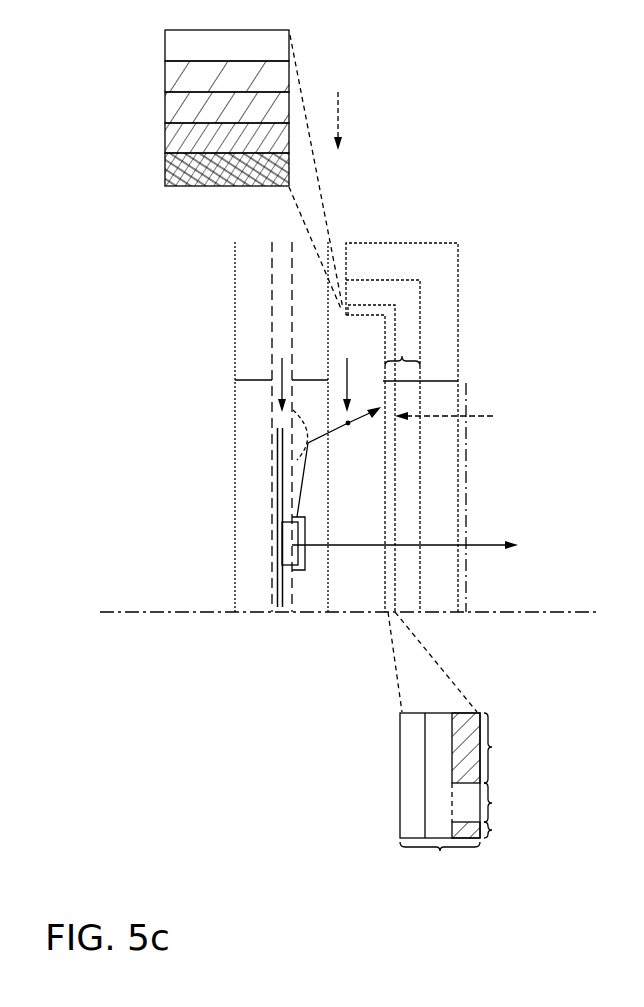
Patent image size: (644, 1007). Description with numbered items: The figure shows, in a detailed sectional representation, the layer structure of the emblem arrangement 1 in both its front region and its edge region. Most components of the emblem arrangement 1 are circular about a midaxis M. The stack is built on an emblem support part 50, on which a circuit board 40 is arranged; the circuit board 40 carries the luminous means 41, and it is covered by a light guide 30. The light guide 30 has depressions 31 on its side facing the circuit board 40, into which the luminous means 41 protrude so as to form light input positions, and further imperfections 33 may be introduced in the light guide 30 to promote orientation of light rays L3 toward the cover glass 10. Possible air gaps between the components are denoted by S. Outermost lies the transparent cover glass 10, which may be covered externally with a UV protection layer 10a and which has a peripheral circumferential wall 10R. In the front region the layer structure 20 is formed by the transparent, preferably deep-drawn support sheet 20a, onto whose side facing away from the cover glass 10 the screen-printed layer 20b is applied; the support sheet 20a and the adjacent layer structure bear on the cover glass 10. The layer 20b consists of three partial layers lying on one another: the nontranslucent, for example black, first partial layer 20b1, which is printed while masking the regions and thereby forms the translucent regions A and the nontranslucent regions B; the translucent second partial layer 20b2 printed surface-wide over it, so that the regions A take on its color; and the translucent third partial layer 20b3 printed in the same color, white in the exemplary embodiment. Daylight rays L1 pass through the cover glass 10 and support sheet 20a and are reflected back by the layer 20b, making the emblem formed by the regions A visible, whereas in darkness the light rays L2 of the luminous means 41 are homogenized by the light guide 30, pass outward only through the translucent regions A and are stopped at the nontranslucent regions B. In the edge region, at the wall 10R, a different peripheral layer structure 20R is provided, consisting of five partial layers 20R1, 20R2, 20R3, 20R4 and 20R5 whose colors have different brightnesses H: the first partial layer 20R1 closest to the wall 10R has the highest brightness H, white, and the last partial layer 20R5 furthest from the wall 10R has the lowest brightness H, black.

The emblem arrangement 1 is at (505, 332).
The cover glass 10 is at (442, 605).
The UV protection layer 10a is at (466, 578).
The peripheral circumferential wall 10R is at (372, 259).
The layer structure 20 is at (402, 353).
The transparent support sheet 20a is at (408, 605).
The screen-printed layer 20b is at (388, 606).
The first partial layer 20b1 is at (467, 747).
The second partial layer 20b2 is at (440, 747).
The third partial layer 20b3 is at (412, 788).
The peripheral layer structure 20R is at (354, 315).
The first partial layer 20R1 is at (165, 47).
The second partial layer 20R2 is at (165, 78).
The third partial layer 20R3 is at (165, 108).
The fourth partial layer 20R4 is at (165, 139).
The fifth partial layer 20R5 is at (165, 170).
The light guide 30 is at (302, 605).
The depression 31 is at (303, 562).
The imperfections 33 is at (303, 422).
The circuit board 40 is at (278, 495).
The luminous means 41 is at (288, 552).
The emblem support part 50 is at (240, 605).
The translucent regions A is at (497, 803).
The nontranslucent regions B is at (497, 748).
The brightness H is at (340, 109).
The light rays L1 is at (493, 416).
The light rays L2 is at (492, 545).
The light rays L3 is at (348, 423).
The midaxis M is at (575, 611).
The air gaps S is at (314, 371).